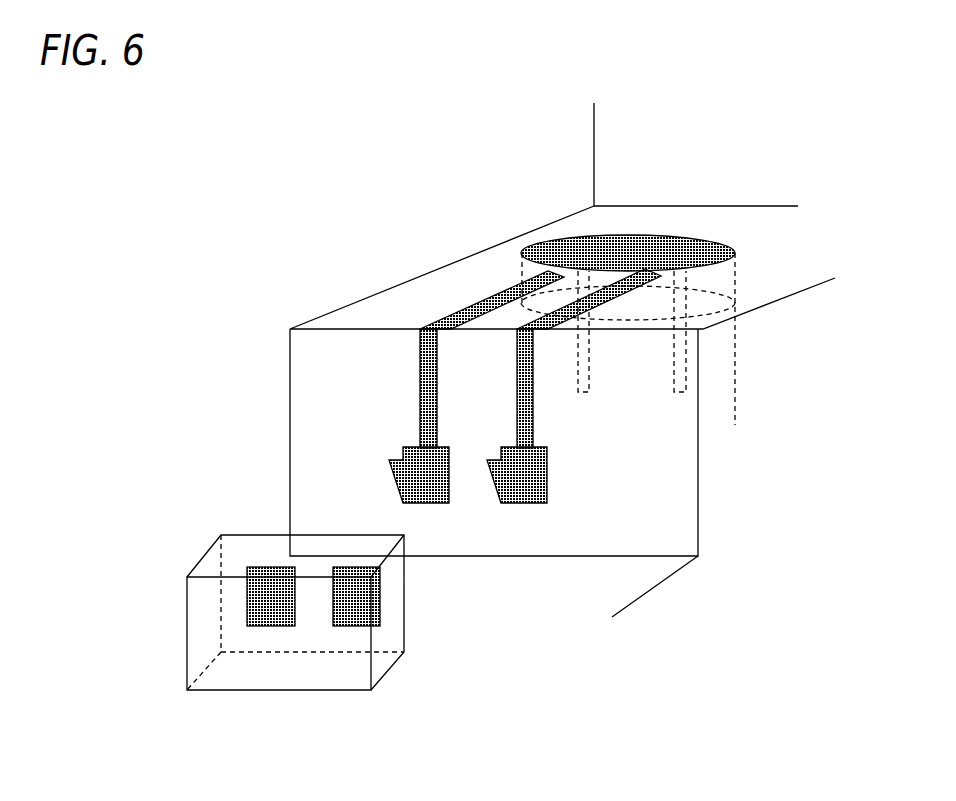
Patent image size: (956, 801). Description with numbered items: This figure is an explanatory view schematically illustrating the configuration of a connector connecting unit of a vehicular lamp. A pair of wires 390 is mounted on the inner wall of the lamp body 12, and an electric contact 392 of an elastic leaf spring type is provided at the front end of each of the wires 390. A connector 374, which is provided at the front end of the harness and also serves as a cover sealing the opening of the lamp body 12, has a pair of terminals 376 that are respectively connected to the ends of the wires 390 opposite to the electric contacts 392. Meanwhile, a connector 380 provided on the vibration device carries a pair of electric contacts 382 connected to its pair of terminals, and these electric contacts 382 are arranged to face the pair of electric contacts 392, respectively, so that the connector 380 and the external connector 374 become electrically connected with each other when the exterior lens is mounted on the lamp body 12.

The lamp body 12 is at (403, 295).
The connector 374 is at (736, 350).
The terminals 376 is at (585, 395).
The connector 380 is at (236, 542).
The electric contacts 382 is at (267, 626).
The wires 390 is at (563, 307).
The electric contacts 392 is at (432, 505).